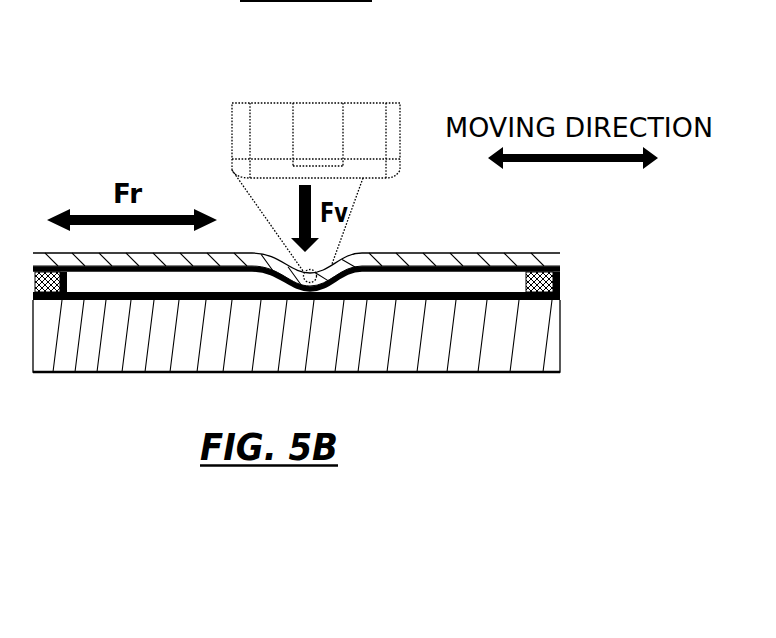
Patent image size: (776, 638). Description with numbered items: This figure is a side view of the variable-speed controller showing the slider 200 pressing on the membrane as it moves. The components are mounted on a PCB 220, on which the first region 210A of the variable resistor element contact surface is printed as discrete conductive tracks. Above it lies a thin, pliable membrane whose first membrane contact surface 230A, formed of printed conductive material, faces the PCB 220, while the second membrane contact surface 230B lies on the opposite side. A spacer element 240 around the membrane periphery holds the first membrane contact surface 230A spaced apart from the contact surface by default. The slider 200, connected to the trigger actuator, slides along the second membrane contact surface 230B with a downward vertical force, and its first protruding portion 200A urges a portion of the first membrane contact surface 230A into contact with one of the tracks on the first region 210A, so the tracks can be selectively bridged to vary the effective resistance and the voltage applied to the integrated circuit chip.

The slider 200 is at (373, 100).
The first protruding portion 200A is at (238, 140).
The first region 210A is at (312, 293).
The PCB 220 is at (115, 346).
The first membrane contact surface 230A is at (560, 267).
The second membrane contact surface 230B is at (560, 253).
The spacer element 240 is at (560, 285).